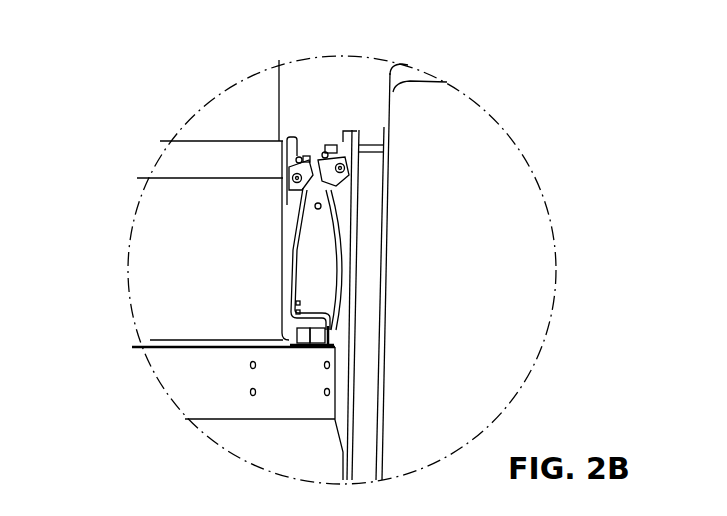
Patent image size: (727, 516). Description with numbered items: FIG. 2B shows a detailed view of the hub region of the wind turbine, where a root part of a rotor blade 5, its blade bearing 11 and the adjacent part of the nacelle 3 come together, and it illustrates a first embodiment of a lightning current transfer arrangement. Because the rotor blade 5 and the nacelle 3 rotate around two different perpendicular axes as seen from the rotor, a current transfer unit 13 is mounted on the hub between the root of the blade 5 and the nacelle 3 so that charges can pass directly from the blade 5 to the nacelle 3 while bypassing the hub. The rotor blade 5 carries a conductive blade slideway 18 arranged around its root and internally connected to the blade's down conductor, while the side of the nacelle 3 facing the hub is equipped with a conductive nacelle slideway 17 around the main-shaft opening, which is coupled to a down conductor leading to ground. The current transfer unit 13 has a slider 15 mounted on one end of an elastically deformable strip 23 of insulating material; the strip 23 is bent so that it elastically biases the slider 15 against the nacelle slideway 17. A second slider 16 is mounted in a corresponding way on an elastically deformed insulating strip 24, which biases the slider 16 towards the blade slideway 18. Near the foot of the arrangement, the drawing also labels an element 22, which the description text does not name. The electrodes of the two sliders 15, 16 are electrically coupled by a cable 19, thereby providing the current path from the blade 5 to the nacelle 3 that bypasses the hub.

The nacelle 3 is at (450, 110).
The rotor blade 5 is at (232, 92).
The blade bearing 11 is at (185, 374).
The current transfer unit 13 is at (323, 128).
The slider 15 is at (345, 158).
The second slider 16 is at (293, 133).
The nacelle slideway 17 is at (351, 410).
The blade slideway 18 is at (165, 155).
The cable 19 is at (318, 208).
The base block 22 is at (335, 343).
The elastically deformable strip 23 is at (340, 272).
The elastically deformed strip 24 is at (290, 290).